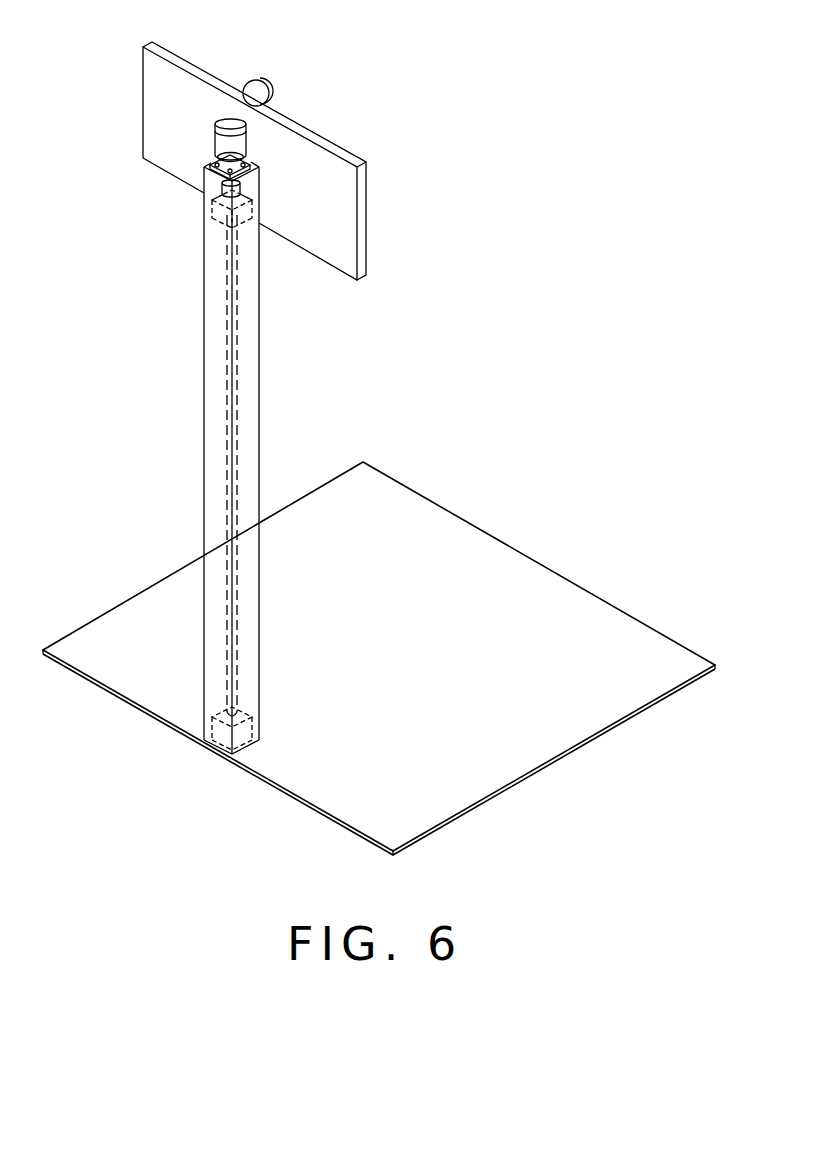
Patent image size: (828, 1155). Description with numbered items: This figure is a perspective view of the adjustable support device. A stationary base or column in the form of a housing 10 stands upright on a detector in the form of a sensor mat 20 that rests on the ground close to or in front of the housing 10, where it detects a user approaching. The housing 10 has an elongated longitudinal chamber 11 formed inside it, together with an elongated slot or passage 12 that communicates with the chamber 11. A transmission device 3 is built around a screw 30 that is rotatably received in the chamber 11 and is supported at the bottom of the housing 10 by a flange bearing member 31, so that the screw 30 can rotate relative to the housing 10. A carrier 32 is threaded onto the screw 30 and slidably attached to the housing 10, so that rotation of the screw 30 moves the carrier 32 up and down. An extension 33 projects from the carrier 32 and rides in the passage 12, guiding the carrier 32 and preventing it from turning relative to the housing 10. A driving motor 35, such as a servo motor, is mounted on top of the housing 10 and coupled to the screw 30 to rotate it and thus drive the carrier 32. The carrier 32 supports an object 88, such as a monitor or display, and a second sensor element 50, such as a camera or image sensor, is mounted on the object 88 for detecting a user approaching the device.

The transmission device 3 is at (212, 402).
The housing 10 is at (204, 511).
The chamber 11 is at (207, 163).
The passage 12 is at (252, 167).
The sensor mat 20 is at (527, 607).
The screw 30 is at (227, 446).
The flange bearing member 31 is at (205, 738).
The carrier 32 is at (223, 215).
The extension 33 is at (257, 222).
The driving motor 35 is at (227, 143).
The sensor element 50 is at (254, 92).
The object 88 is at (358, 232).